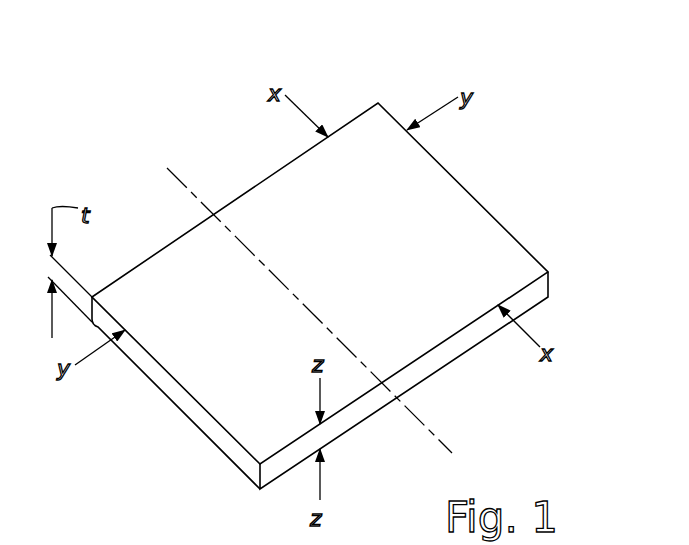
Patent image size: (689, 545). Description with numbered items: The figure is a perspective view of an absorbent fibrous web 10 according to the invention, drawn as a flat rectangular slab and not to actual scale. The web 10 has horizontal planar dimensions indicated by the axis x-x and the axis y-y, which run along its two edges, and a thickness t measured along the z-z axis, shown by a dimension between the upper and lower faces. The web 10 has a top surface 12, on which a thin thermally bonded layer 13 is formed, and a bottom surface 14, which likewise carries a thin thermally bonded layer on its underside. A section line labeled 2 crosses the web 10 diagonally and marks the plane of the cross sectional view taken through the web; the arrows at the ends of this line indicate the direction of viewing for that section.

The fibrous web 10 is at (519, 207).
The top surface 12 is at (518, 258).
The thin thermally bonded layer 13 is at (108, 313).
The bottom surface 14 is at (528, 312).
The section line 2- 2 is at (167, 168).